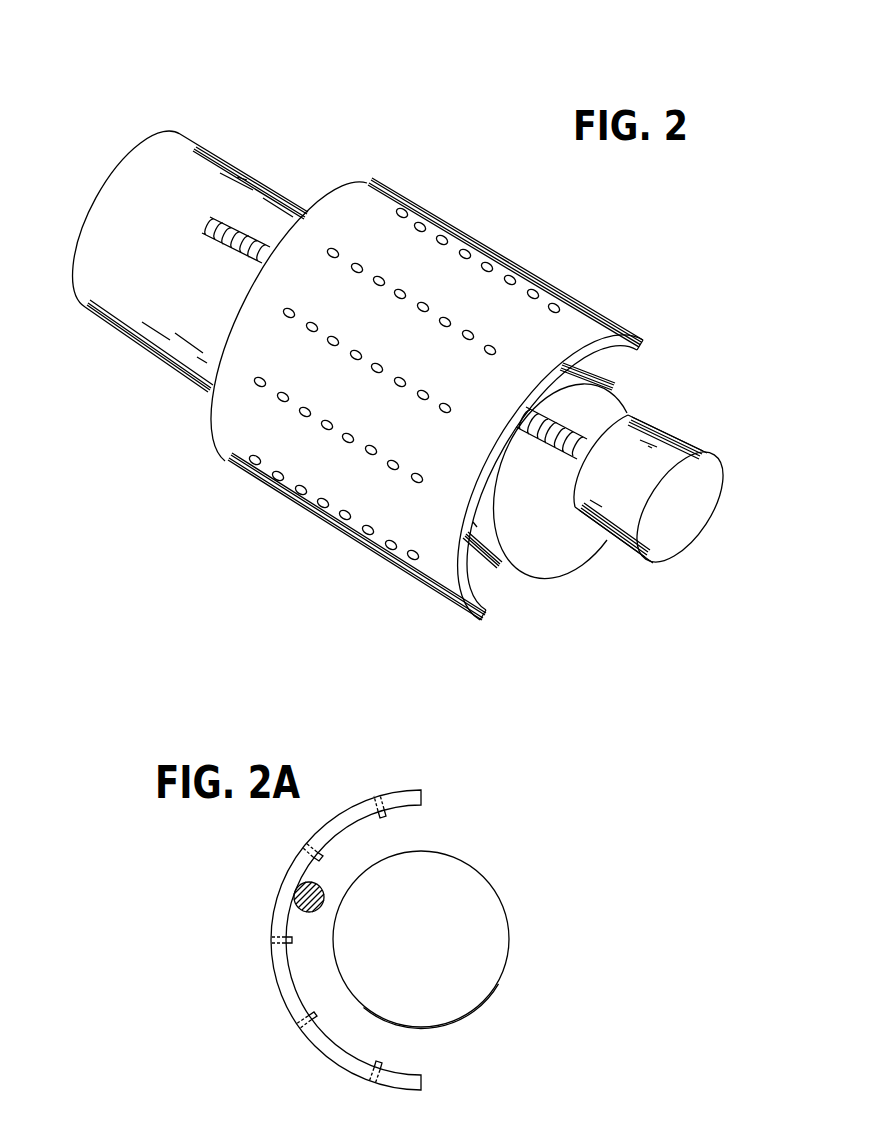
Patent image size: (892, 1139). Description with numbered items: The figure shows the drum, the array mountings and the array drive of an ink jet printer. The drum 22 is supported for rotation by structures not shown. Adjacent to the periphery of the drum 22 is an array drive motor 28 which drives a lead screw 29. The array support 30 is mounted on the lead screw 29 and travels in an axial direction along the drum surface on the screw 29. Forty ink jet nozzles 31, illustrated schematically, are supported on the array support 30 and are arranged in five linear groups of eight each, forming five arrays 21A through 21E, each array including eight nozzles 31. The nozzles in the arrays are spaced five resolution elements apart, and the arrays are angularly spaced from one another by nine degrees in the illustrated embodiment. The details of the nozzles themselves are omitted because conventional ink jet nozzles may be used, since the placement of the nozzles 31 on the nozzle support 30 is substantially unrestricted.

In FIG. 2, the array support 30 is at (645, 343).
In FIG. 2A, the array support 30 is at (422, 793).
In FIG. 2, the array 21E is at (432, 203).
In FIG. 2, the array 21A is at (238, 480).
In FIG. 2, the ink jet nozzle 31 is at (510, 280).
In FIG. 2A, the ink jet nozzle 31 is at (303, 1023).
In FIG. 2, the drum 22 is at (543, 563).
In FIG. 2A, the drum 22 is at (488, 897).
In FIG. 2, the lead screw 29 is at (588, 413).
In FIG. 2A, the lead screw 29 is at (298, 892).
In FIG. 2, the array drive motor 28 is at (673, 547).